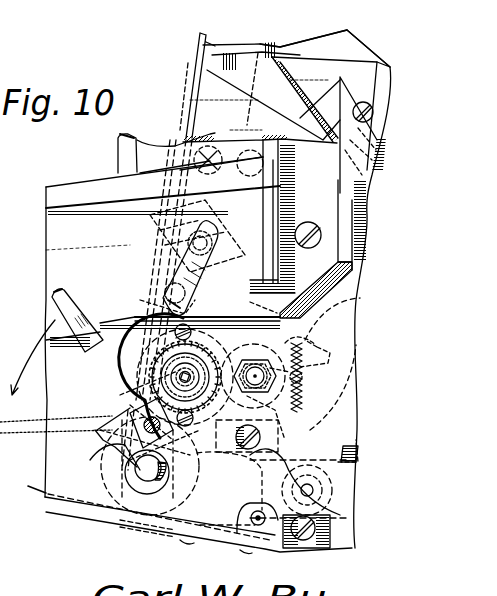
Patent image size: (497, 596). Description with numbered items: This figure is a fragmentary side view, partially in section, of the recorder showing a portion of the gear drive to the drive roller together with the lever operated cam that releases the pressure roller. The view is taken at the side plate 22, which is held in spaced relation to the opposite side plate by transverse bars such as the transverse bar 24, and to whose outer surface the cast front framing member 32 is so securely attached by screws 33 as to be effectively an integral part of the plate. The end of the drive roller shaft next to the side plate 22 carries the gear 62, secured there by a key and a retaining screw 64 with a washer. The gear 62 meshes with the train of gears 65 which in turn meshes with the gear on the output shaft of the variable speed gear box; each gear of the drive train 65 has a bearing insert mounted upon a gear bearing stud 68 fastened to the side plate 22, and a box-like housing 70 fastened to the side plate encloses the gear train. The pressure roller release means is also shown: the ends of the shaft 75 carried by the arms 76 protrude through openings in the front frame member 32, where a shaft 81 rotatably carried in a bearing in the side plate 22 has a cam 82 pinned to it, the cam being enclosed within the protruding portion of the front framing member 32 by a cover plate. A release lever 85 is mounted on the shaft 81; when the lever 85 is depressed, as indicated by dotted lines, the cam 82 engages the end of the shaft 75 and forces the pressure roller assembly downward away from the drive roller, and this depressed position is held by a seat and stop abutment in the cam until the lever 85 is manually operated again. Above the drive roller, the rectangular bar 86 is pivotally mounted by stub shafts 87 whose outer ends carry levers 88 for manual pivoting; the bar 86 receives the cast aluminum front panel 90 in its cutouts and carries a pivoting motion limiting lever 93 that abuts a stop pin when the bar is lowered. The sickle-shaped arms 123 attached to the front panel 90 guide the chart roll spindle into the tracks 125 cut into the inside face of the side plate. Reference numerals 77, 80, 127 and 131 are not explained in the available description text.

The side plate 22 is at (215, 117).
The transverse bar 24 is at (215, 470).
The front framing member 32 is at (117, 153).
The screws 33 is at (310, 222).
The gear 62 is at (140, 370).
The retaining screw 64 is at (184, 377).
The train of gears 65 is at (301, 423).
The gear bearing stud 68 is at (290, 378).
The box-like housing 70 is at (10, 0).
The shaft 75 is at (135, 470).
The arms 76 is at (345, 455).
The pivot pin 77 is at (307, 490).
The member 80 is at (318, 0).
The shaft 81 is at (145, 415).
The cam 82 is at (115, 452).
The release lever 85 is at (68, 308).
The rectangular bar 86 is at (152, 230).
The stub shafts 87 is at (140, 300).
The levers 88 is at (180, 258).
The front panel 90 is at (190, 80).
The pivoting motion limiting lever 93 is at (345, 322).
The sickle-shaped arms 123 is at (352, 48).
The tracks 125 is at (262, 43).
The member 127 is at (140, 0).
The member 131 is at (70, 0).